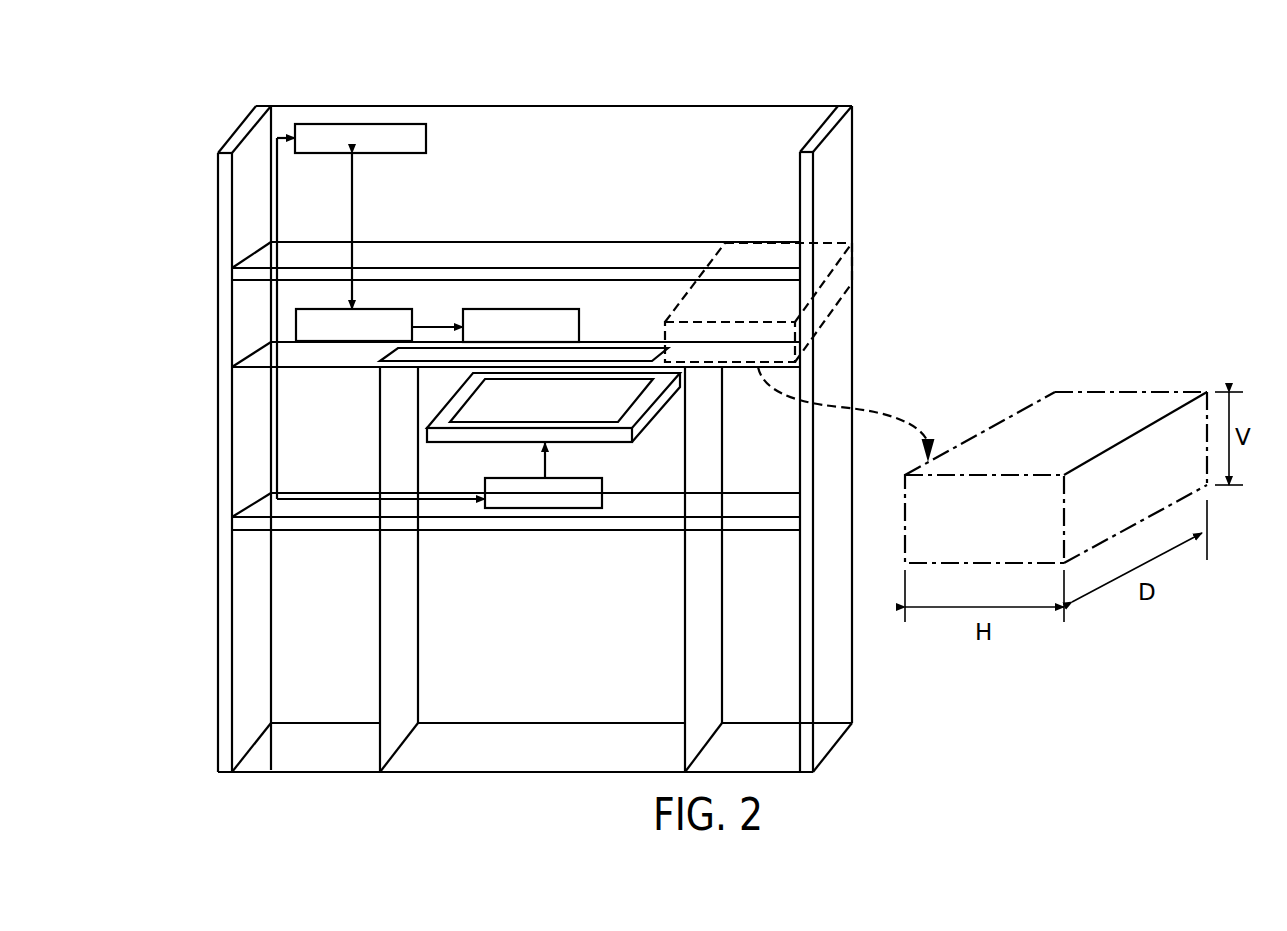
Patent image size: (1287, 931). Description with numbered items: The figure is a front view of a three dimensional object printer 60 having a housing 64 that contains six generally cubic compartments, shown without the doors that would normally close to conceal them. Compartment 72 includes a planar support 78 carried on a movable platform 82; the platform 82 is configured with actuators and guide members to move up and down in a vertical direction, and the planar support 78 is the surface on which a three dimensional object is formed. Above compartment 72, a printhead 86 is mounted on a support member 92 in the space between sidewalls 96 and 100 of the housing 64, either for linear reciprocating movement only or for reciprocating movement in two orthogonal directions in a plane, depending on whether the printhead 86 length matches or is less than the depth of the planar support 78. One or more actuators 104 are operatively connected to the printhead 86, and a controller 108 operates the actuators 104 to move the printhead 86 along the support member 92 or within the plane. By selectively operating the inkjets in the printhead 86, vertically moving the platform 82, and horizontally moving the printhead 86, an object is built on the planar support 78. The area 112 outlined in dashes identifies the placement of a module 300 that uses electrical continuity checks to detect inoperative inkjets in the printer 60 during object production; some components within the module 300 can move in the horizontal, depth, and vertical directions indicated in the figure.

The printer 60 is at (280, 95).
The sidewall 96 is at (218, 233).
The sidewall 100 is at (852, 125).
The controller 108 is at (428, 141).
The actuators 104 is at (412, 316).
The printhead 86 is at (580, 316).
The support member 92 is at (312, 369).
The area 112 is at (858, 275).
The housing 64 is at (836, 362).
The planar support 78 is at (540, 413).
The movable platform 82 is at (572, 414).
The compartment 72 is at (446, 470).
The module 300 is at (1073, 390).